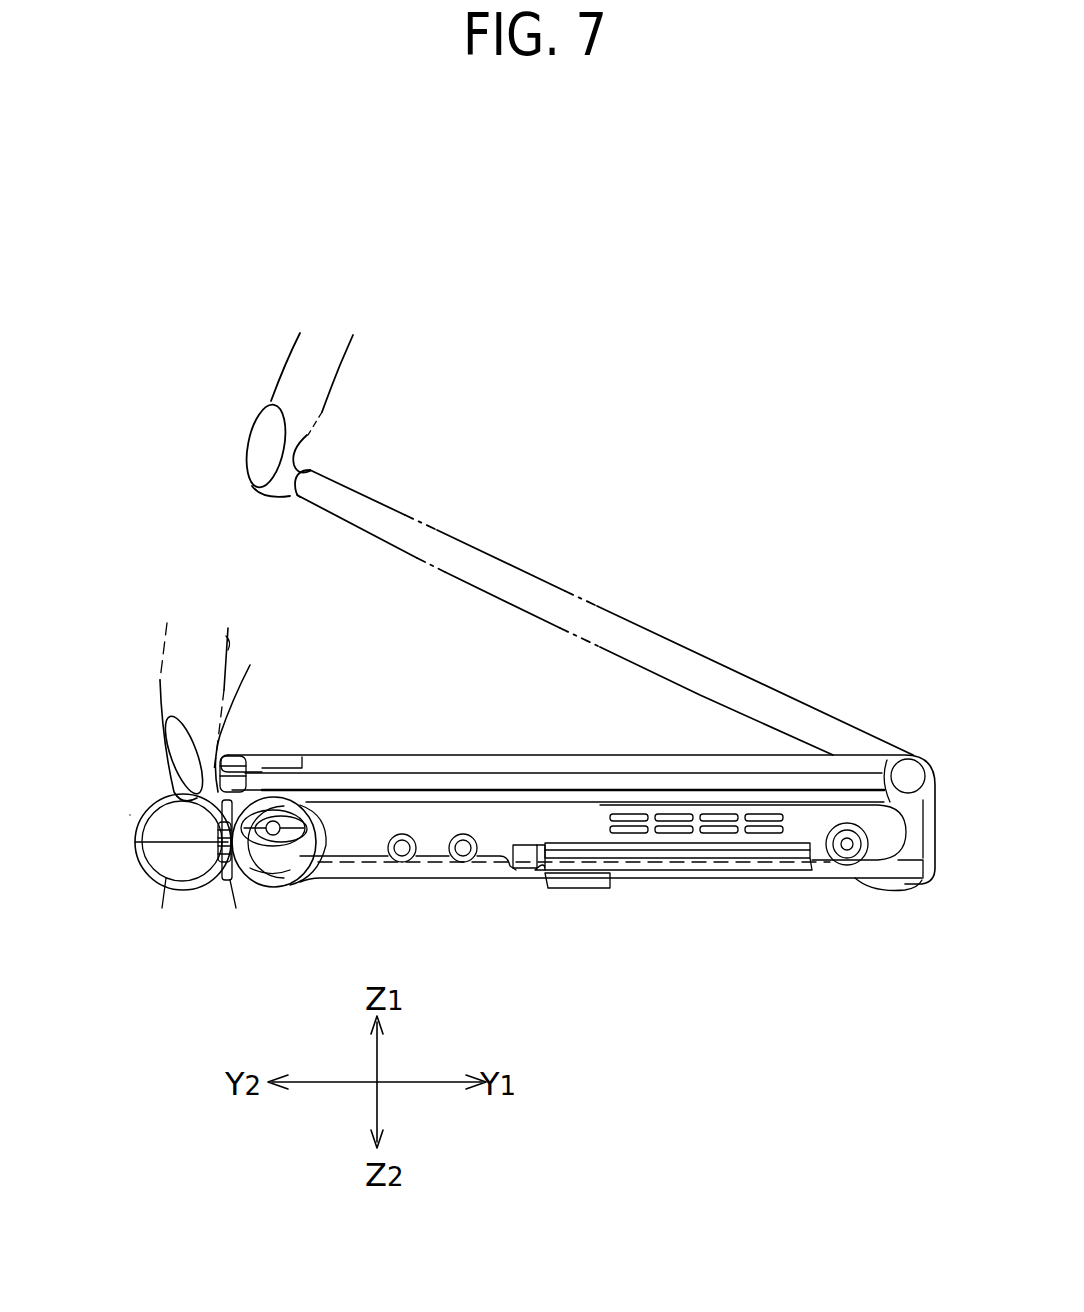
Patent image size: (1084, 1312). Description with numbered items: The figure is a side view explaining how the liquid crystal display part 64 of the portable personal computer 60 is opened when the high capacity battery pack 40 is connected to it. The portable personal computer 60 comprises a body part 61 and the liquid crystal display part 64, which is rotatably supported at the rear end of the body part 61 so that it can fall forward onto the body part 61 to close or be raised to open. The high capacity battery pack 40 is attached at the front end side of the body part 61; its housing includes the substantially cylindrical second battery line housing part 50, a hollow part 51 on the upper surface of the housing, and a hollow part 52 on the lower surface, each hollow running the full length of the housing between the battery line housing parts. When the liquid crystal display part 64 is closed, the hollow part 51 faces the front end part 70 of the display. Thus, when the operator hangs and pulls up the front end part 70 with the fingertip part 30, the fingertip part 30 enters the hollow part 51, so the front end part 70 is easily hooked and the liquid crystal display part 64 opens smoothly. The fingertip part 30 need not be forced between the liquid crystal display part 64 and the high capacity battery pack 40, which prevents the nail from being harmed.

The fingertip part 30 is at (183, 697).
The high capacity battery pack 40 is at (130, 815).
The second battery line housing part 50 is at (172, 888).
The hollow part 51 is at (228, 774).
The hollow part 52 is at (232, 886).
The portable personal computer 60 is at (692, 387).
The body part 61 is at (432, 870).
The liquid crystal display part 64 is at (612, 616).
The front end part 70 is at (313, 440).